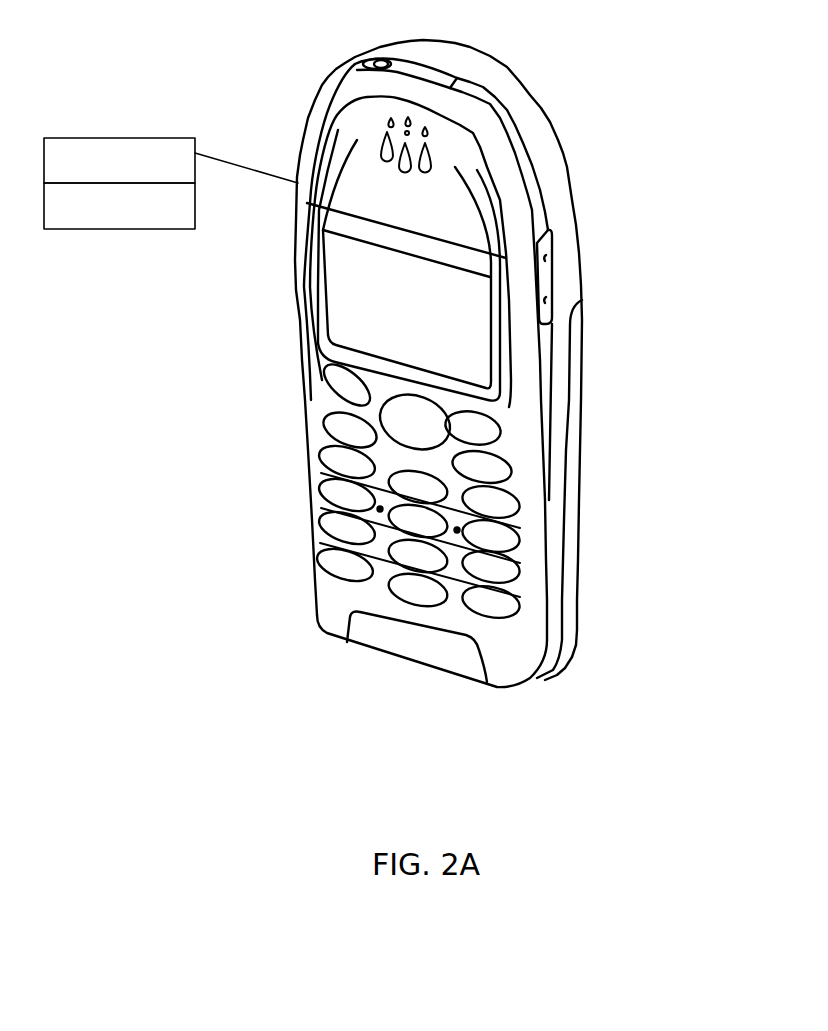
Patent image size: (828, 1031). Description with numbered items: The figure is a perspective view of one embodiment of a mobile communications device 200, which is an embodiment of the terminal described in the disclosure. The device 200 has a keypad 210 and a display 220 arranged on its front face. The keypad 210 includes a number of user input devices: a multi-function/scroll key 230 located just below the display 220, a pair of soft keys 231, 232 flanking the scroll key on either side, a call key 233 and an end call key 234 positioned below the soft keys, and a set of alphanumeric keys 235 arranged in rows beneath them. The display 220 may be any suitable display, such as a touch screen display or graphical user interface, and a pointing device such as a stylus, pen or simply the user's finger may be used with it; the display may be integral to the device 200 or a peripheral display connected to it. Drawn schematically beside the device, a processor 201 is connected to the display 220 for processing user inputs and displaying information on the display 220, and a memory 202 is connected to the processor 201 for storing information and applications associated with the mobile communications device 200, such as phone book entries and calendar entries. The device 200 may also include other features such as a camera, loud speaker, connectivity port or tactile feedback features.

The mobile communications device 200 is at (535, 53).
The processor 201 is at (90, 138).
The memory 202 is at (90, 229).
The keypad 210 is at (508, 623).
The display 220 is at (455, 335).
The multi-function/scroll key 230 is at (423, 427).
The soft key 231 is at (345, 390).
The soft key 232 is at (482, 428).
The call key 233 is at (345, 427).
The end call key 234 is at (488, 467).
The alphanumeric keys 235 is at (350, 567).